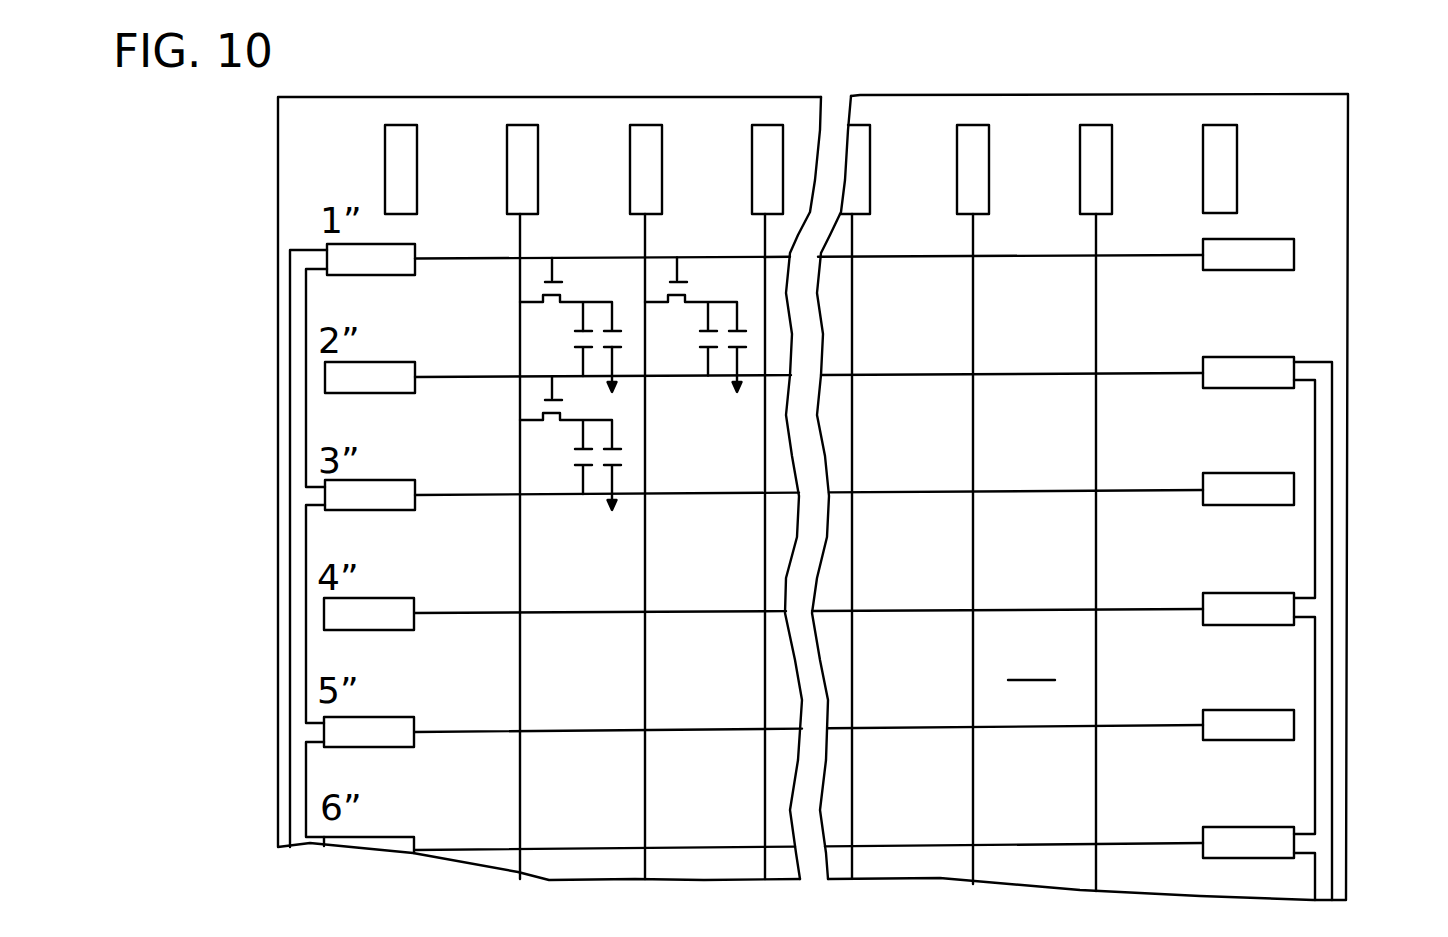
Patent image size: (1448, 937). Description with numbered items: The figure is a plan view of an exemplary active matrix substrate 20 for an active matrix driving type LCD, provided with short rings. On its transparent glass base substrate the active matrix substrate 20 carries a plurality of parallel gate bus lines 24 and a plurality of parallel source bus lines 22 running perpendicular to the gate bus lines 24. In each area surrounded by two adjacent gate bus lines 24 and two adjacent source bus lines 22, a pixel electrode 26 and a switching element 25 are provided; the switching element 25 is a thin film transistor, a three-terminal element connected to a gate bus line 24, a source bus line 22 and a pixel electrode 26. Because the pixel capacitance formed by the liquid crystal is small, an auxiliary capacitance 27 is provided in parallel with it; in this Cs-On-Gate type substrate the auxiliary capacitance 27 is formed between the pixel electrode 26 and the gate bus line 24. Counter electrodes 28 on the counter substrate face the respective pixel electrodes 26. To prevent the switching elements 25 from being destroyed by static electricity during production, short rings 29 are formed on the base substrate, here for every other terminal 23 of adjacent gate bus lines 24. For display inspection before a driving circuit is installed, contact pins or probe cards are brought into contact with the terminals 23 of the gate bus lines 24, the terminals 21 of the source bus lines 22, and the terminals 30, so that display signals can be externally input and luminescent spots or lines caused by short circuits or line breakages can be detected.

The active matrix substrate 20 is at (813, 497).
The terminal of source bus line 21 is at (527, 140).
The source bus line 22 is at (520, 320).
The terminal of gate bus line 23 is at (378, 250).
The gate bus line 24 is at (463, 255).
The switching element 25 is at (562, 285).
The pixel electrode 26 is at (619, 330).
The auxiliary capacitance 27 is at (575, 345).
The counter electrode 28 is at (622, 390).
The short ring 29 is at (300, 290).
The terminal 30 is at (403, 150).